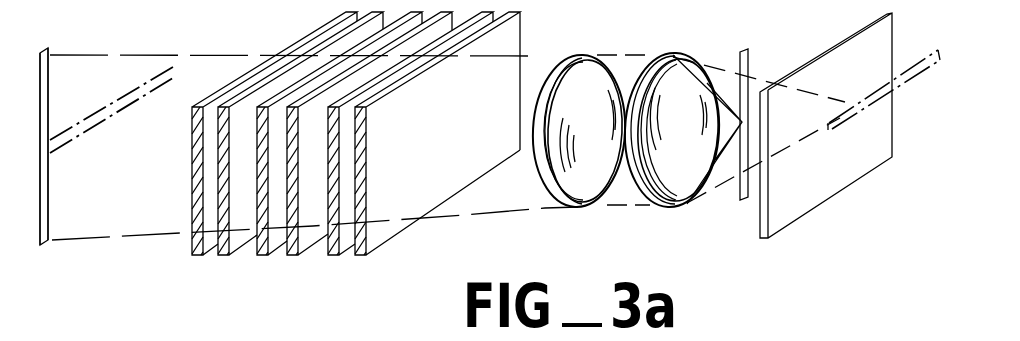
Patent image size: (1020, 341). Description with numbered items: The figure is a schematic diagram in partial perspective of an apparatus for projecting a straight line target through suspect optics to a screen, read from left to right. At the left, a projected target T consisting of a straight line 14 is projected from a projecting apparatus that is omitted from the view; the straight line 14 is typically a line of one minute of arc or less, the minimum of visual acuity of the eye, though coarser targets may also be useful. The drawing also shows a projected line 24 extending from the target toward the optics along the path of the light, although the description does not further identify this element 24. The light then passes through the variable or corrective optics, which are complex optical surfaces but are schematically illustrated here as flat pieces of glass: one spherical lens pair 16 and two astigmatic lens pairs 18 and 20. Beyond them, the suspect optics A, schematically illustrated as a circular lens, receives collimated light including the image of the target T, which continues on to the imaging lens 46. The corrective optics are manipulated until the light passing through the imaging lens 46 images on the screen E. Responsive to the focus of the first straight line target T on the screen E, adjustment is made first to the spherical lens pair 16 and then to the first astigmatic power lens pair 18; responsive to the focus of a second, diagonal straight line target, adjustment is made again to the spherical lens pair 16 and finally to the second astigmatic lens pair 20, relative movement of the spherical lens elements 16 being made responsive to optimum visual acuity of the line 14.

The straight line 14 is at (50, 90).
The line object 24 is at (145, 85).
The projected target T is at (52, 183).
The spherical lens pair 16 is at (237, 263).
The first astigmatic lens pair 18 is at (250, 263).
The second astigmatic lens pair 20 is at (322, 263).
The suspect optics A is at (575, 212).
The imaging lens 46 is at (672, 190).
The screen E is at (835, 183).